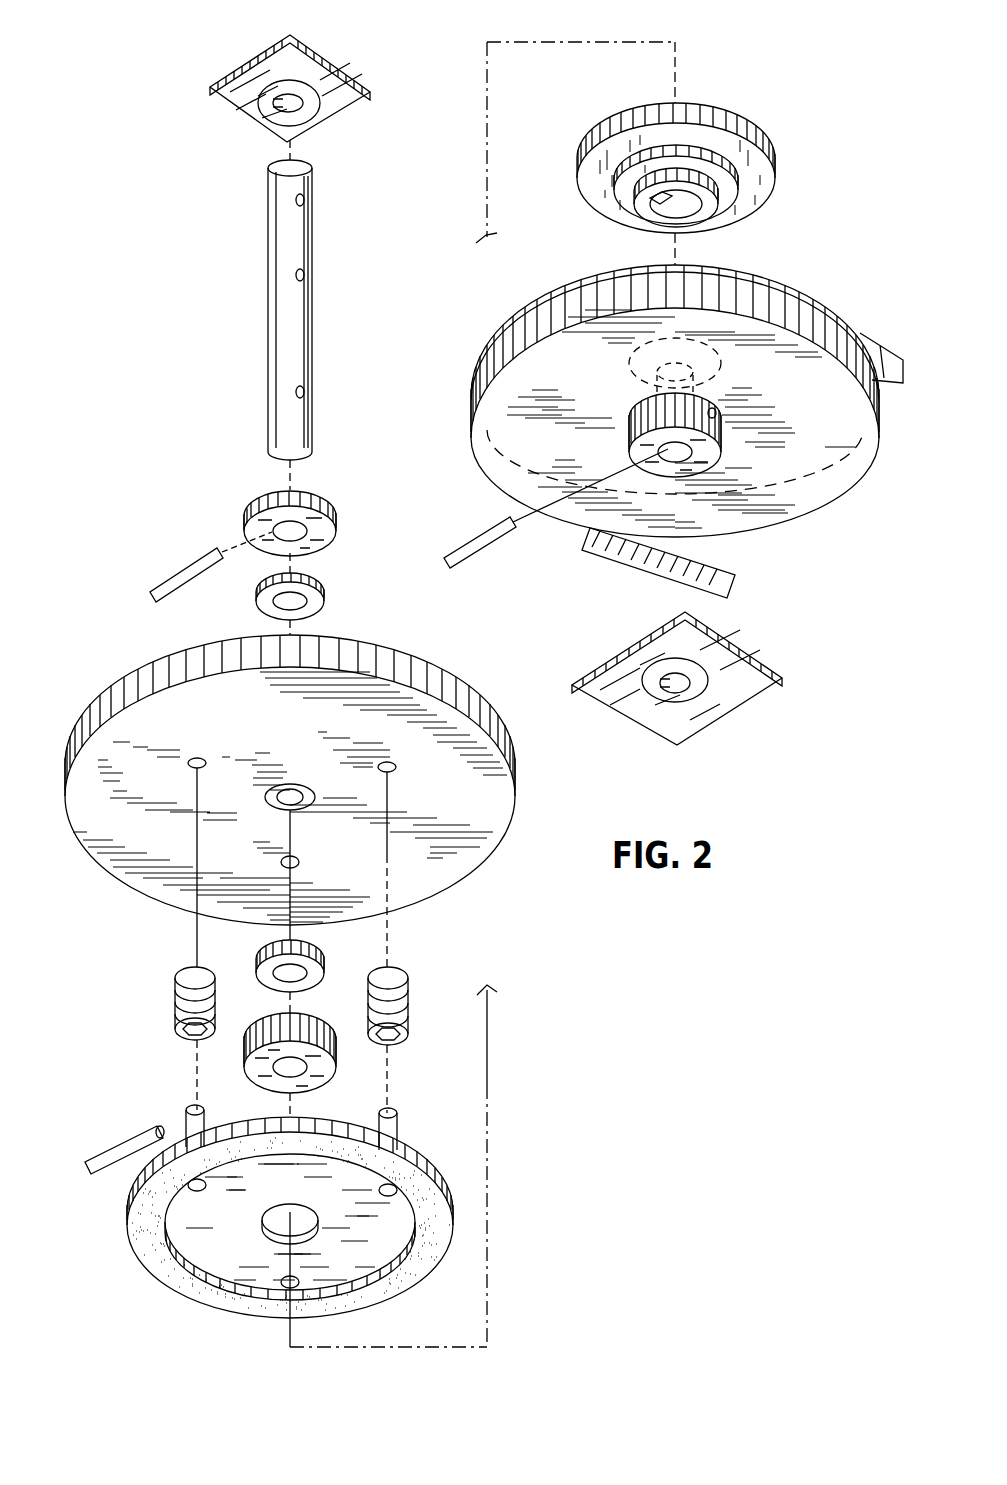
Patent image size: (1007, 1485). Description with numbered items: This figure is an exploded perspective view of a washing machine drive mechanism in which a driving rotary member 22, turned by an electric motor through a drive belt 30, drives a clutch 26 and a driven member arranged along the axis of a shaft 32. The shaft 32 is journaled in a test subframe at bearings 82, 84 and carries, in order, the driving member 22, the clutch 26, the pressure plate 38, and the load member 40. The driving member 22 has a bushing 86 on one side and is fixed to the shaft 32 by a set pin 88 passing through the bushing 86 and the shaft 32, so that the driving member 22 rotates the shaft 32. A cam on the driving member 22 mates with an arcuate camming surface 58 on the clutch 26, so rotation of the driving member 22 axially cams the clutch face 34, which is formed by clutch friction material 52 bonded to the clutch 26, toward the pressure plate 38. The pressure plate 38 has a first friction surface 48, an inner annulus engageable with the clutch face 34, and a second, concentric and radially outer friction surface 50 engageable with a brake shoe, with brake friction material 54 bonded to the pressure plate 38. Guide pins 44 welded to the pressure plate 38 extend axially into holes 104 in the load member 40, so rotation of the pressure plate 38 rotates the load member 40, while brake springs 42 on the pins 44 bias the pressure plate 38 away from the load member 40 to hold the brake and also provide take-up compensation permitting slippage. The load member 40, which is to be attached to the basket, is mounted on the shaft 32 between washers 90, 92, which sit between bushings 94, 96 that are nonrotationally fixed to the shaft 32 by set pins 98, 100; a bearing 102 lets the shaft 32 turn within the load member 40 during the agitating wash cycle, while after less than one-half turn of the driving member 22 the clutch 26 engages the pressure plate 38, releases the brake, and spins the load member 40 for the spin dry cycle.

The driving rotary member 22 is at (532, 443).
The clutch 26 is at (711, 179).
The drive belt 30 is at (737, 595).
The shaft 32 is at (282, 402).
The clutch face 34 is at (757, 118).
The pressure plate 38 is at (261, 1232).
The load member 40 is at (286, 876).
The brake springs 42 is at (175, 1000).
The guide pins 44 is at (203, 1117).
The first friction surface 48 is at (195, 1240).
The second friction surface 50 is at (157, 1252).
The clutch friction material 52 is at (773, 148).
The brake friction material 54 is at (140, 1167).
The arcuate camming surface 58 is at (715, 207).
The bearing 82 is at (690, 697).
The bearing 84 is at (265, 108).
The bushing 86 is at (717, 437).
The set pin 88 is at (510, 538).
The washer 90 is at (322, 597).
The washer 92 is at (323, 968).
The bushing 94 is at (337, 528).
The bushing 96 is at (317, 1082).
The set pin 98 is at (218, 552).
The set pin 100 is at (138, 1133).
The bearing 102 is at (292, 790).
The holes 104 is at (197, 763).